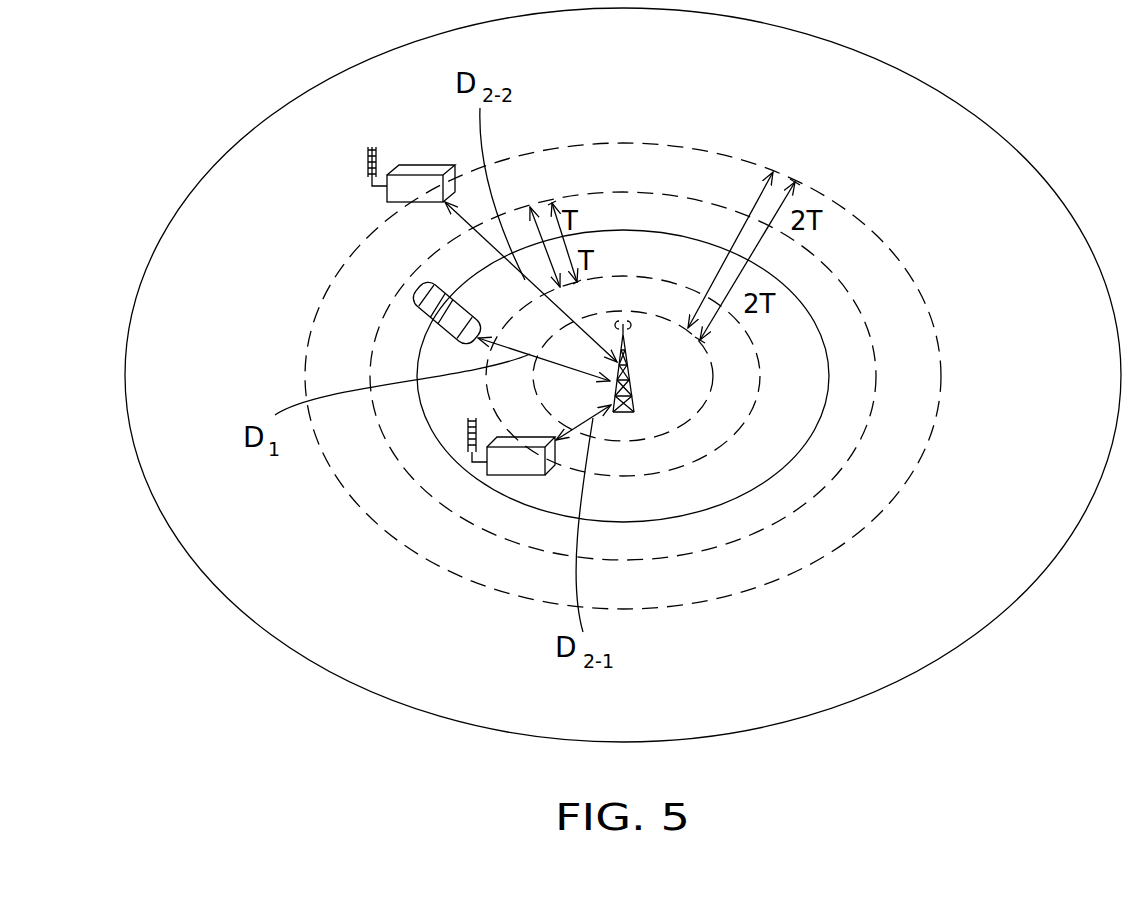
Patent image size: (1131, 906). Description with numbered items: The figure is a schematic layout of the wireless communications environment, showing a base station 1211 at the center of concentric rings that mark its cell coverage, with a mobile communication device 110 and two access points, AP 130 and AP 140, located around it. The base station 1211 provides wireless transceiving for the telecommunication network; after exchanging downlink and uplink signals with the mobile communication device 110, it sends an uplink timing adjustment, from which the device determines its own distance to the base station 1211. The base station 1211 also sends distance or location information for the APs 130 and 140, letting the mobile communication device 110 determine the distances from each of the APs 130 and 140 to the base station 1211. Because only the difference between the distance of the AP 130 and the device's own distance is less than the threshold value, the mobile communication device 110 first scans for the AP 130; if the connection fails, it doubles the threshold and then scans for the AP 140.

The mobile communication device 110 is at (433, 290).
The AP 130 is at (515, 475).
The AP 140 is at (428, 166).
The base station 1211 is at (633, 377).